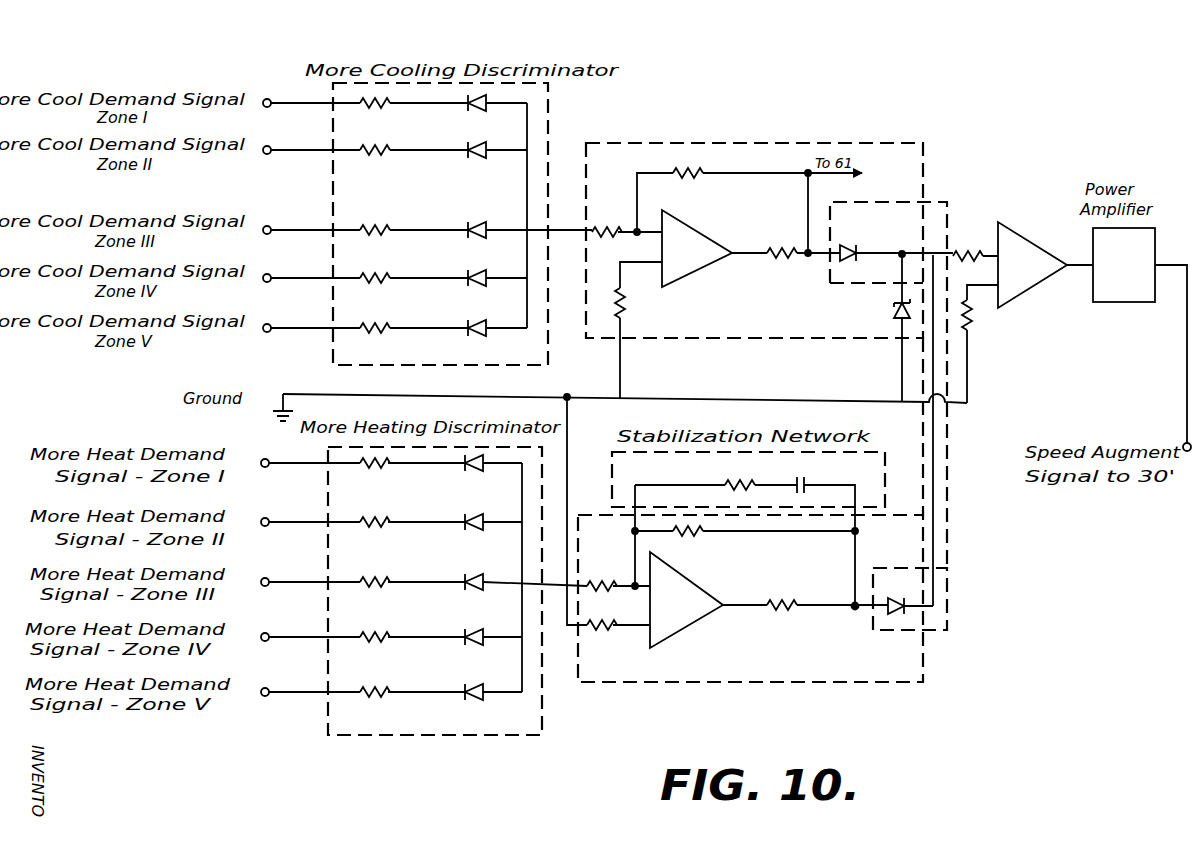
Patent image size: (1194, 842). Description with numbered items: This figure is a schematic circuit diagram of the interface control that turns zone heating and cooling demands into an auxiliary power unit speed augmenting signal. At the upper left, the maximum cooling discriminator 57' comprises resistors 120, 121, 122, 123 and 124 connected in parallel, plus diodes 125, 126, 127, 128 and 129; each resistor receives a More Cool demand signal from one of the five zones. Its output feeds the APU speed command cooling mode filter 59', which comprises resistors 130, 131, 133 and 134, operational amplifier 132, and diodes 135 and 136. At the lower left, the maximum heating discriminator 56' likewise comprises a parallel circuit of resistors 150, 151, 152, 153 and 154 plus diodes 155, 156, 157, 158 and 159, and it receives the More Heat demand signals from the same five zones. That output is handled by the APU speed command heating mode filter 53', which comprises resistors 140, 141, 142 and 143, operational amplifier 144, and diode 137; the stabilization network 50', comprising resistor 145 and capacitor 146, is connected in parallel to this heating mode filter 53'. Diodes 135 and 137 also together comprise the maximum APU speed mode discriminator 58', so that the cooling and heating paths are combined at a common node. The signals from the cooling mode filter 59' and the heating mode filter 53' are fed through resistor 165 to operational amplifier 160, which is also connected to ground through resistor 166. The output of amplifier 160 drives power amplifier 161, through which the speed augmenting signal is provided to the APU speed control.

The resistor 120 is at (393, 104).
The resistor 121 is at (388, 150).
The resistor 122 is at (378, 228).
The resistor 123 is at (388, 278).
The resistor 124 is at (388, 328).
The diode 125 is at (486, 103).
The diode 126 is at (484, 148).
The diode 127 is at (484, 226).
The diode 128 is at (494, 266).
The diode 129 is at (496, 316).
The resistor 130 is at (604, 230).
The resistor 131 is at (700, 170).
The operational amplifier 132 is at (697, 248).
The resistor 133 is at (625, 302).
The resistor 134 is at (772, 251).
The diode 135 is at (864, 238).
The diode 136 is at (892, 310).
The diode 137 is at (900, 602).
The resistor 140 is at (600, 584).
The resistor 141 is at (597, 622).
The resistor 142 is at (690, 536).
The resistor 143 is at (795, 590).
The operational amplifier 144 is at (686, 600).
The resistor 145 is at (735, 482).
The capacitor 146 is at (806, 480).
The resistor 150 is at (378, 466).
The resistor 151 is at (380, 525).
The resistor 152 is at (378, 585).
The resistor 153 is at (384, 640).
The resistor 154 is at (384, 695).
The diode 155 is at (470, 471).
The diode 156 is at (470, 530).
The diode 157 is at (470, 590).
The diode 158 is at (470, 645).
The diode 159 is at (470, 700).
The operational amplifier 160 is at (1032, 265).
The power amplifier 161 is at (1124, 265).
The resistor 165 is at (968, 252).
The resistor 166 is at (972, 318).
The maximum cooling discriminator 57' is at (568, 105).
The APU speed command cooling mode filter 59' is at (886, 120).
The stabilization network 50' is at (935, 450).
The maximum APU speed mode discriminator 58' is at (966, 533).
The APU speed command heating mode filter 53' is at (931, 701).
The maximum heating discriminator 56' is at (437, 760).